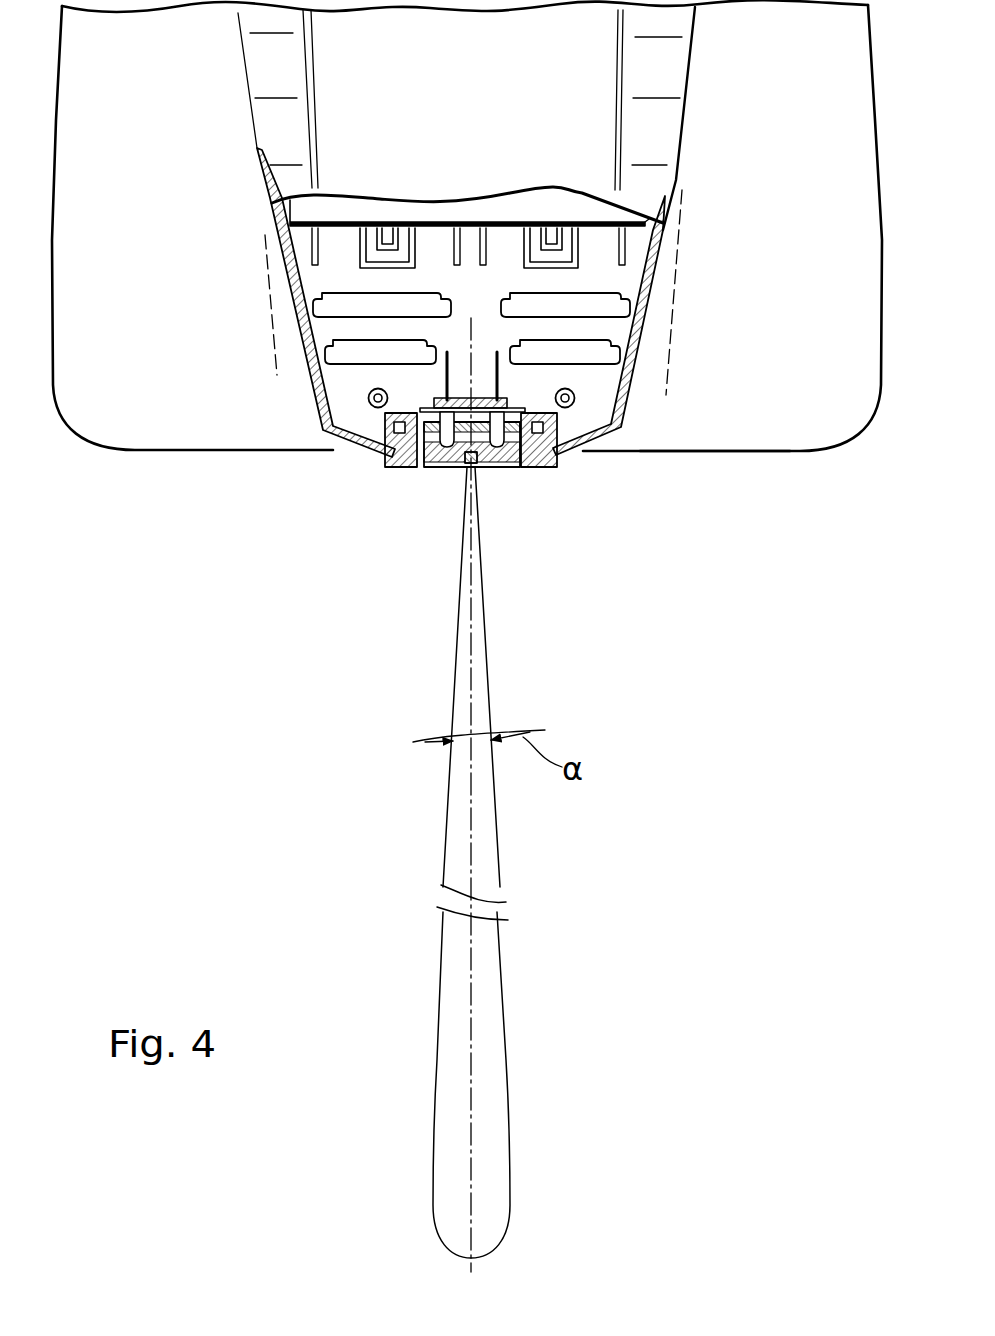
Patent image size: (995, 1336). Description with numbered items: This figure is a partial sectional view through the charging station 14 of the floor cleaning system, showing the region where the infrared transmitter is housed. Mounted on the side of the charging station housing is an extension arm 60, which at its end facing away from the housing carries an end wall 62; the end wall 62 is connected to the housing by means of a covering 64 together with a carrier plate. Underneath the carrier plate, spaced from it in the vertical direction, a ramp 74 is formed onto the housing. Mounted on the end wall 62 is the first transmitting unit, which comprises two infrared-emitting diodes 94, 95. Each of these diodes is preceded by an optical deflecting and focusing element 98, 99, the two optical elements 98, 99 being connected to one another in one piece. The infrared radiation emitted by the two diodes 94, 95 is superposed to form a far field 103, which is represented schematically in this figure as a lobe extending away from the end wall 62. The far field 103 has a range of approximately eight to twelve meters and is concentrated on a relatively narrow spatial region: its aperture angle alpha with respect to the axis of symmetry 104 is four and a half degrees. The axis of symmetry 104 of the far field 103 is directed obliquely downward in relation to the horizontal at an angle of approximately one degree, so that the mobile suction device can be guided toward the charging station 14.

The central charging station 14 is at (816, 462).
The extension arm 60 is at (578, 68).
The end wall 62 is at (571, 456).
The covering 64 is at (566, 132).
The ramp 74 is at (702, 428).
The infrared-emitting diode 94 is at (433, 400).
The infrared-emitting diode 95 is at (506, 402).
The optical deflecting and focusing element 98 is at (437, 467).
The optical deflecting and focusing element 99 is at (503, 467).
The far field 103 is at (440, 963).
The axis of symmetry 104 is at (473, 1094).